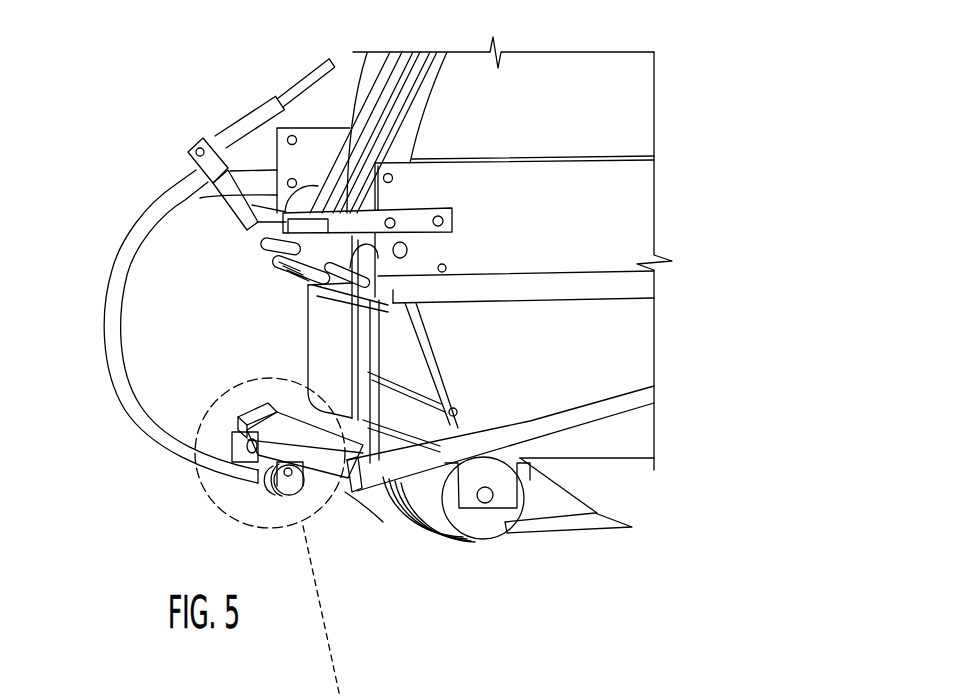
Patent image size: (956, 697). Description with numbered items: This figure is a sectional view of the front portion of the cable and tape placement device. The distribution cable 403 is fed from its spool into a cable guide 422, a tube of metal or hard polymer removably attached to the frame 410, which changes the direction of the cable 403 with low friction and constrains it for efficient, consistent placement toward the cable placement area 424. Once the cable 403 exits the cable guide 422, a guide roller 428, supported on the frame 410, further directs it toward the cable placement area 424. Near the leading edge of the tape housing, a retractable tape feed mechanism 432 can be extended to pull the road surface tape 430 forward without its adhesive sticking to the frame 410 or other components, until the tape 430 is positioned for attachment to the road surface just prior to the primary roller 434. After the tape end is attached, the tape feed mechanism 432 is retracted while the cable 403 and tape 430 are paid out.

The distribution cable 403 is at (308, 62).
The frame 410 is at (566, 416).
The cable guide 422 is at (113, 279).
The cable placement area 424 is at (368, 510).
The guide roller 428 is at (290, 506).
The road surface tape 430 is at (525, 458).
The tape feed mechanism 432 is at (330, 335).
The primary roller 434 is at (480, 523).